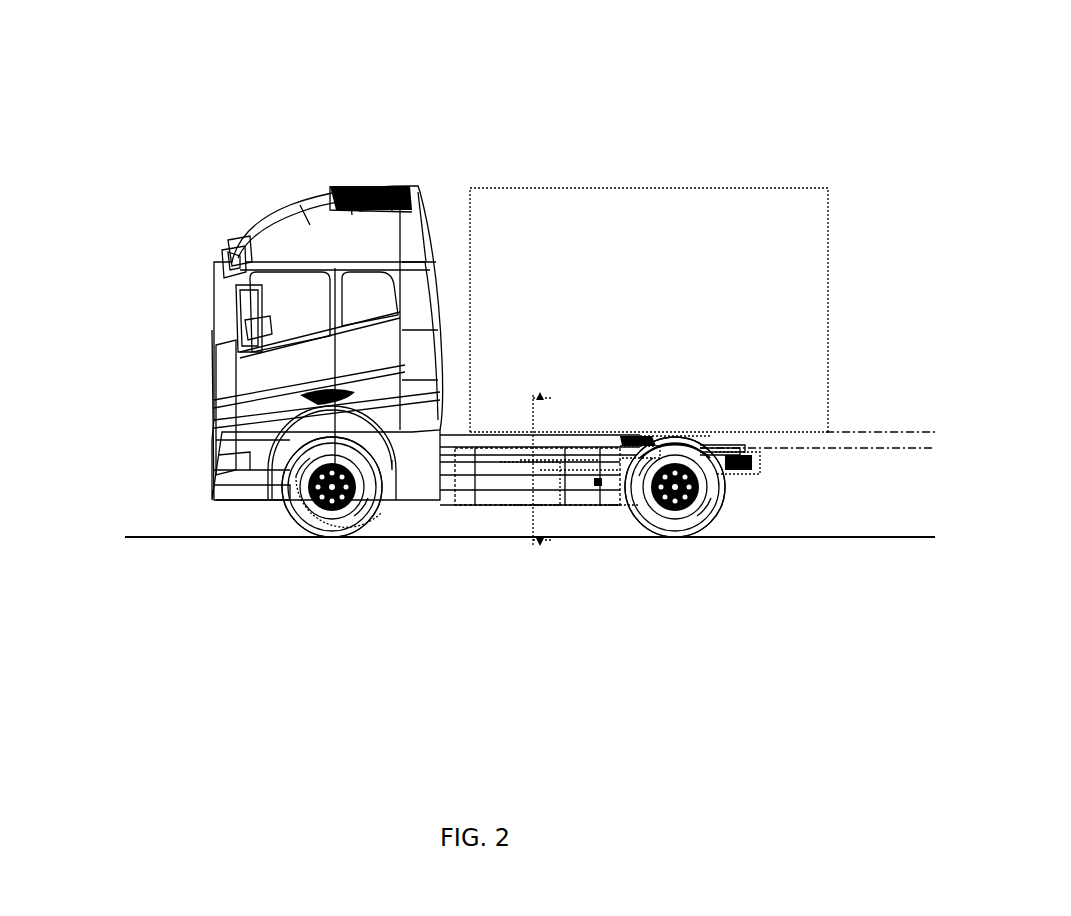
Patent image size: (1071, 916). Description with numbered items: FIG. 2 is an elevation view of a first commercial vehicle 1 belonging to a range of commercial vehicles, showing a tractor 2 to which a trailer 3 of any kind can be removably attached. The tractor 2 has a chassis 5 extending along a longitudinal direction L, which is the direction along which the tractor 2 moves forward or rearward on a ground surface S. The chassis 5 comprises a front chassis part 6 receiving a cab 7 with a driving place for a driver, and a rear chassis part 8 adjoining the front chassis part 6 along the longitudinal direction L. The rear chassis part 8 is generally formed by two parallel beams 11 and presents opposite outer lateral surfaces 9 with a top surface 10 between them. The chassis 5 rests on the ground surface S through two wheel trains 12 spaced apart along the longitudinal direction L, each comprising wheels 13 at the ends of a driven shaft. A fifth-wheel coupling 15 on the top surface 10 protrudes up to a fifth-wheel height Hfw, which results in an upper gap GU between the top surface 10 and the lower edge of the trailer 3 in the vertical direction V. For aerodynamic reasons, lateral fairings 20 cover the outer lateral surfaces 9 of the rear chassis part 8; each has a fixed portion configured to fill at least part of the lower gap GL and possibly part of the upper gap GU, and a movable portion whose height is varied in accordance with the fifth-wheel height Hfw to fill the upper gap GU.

The first commercial vehicle 1 is at (556, 80).
The tractor 2 is at (403, 165).
The trailer 3 is at (570, 180).
The chassis 5 is at (553, 688).
The front chassis part 6 is at (368, 572).
The cab 7 is at (240, 232).
The rear chassis part 8 is at (565, 568).
The outer lateral surfaces 9 is at (716, 452).
The top surface 10 is at (705, 448).
The beams 11 is at (746, 462).
The wheel trains 12 is at (385, 522).
The wheels 13 is at (298, 517).
The fifth-wheel coupling 15 is at (637, 433).
The lateral fairings 20 is at (508, 483).
The ground surface S is at (145, 537).
The vertical direction V is at (128, 695).
The longitudinal direction L is at (128, 695).
The upper gap GU is at (703, 440).
The lower gap GL is at (620, 493).
The fifth-wheel height Hfw is at (903, 453).